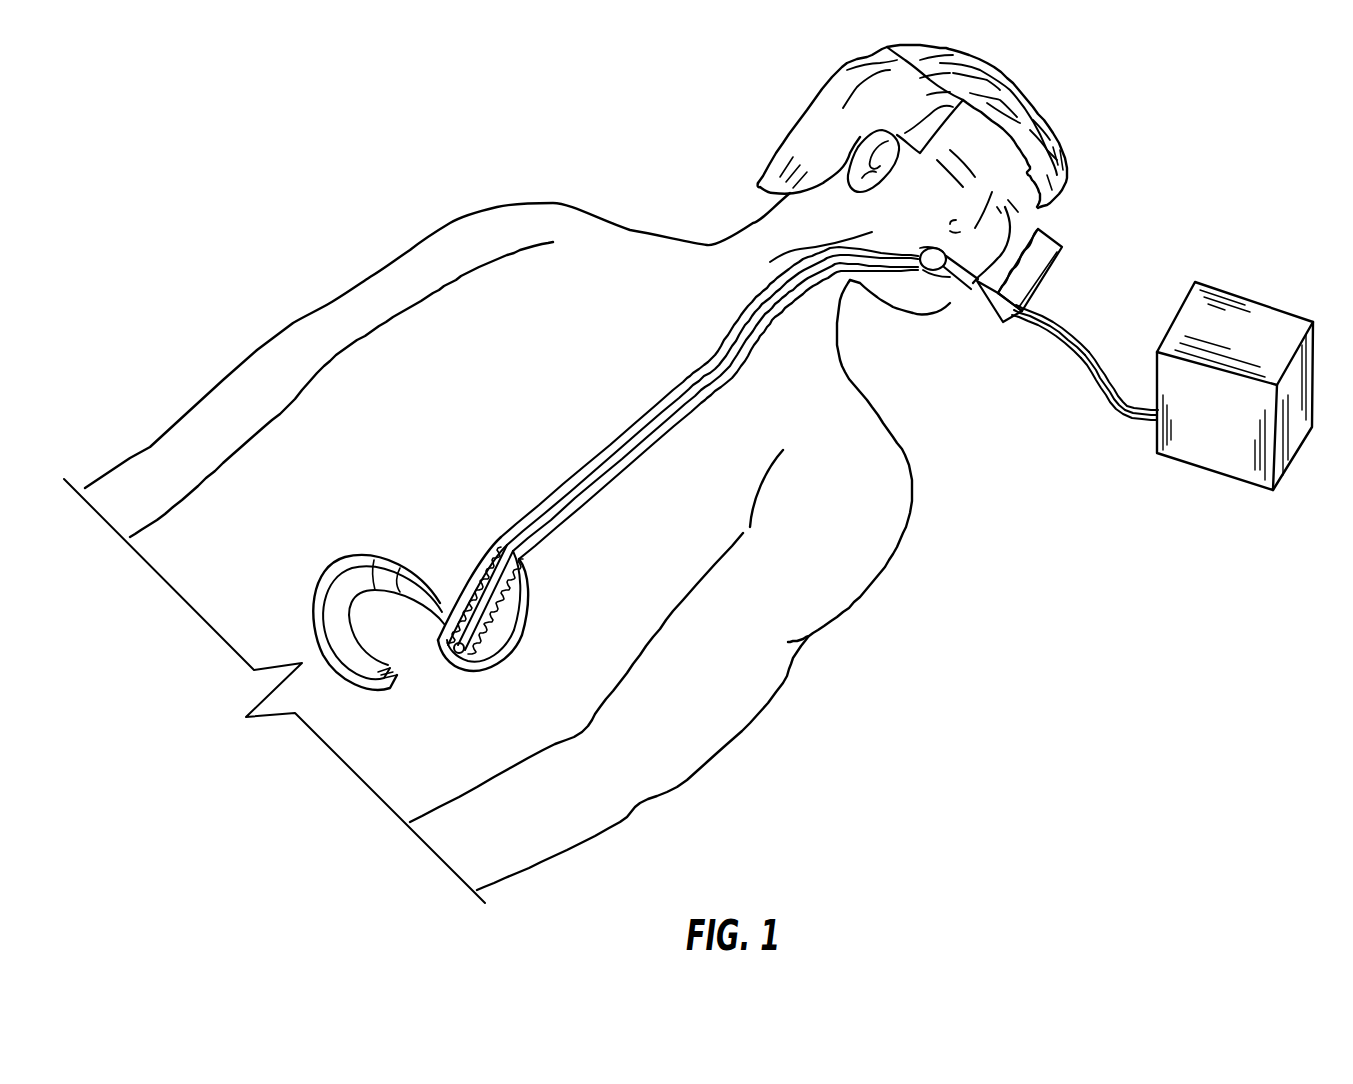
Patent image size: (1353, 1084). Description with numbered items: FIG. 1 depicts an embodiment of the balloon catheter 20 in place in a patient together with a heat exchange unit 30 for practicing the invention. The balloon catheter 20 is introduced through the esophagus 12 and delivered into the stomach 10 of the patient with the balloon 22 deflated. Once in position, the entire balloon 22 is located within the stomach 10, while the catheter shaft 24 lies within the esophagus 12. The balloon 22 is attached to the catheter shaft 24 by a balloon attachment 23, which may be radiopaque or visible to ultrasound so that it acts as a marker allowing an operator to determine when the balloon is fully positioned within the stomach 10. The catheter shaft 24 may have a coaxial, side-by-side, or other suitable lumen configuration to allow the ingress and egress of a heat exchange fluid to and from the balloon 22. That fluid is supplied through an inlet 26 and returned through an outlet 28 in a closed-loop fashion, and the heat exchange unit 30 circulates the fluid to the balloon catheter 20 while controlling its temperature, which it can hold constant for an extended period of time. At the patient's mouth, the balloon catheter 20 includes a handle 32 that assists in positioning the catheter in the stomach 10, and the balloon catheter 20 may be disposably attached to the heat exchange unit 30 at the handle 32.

The stomach 10 is at (500, 617).
The esophagus 12 is at (707, 395).
The balloon catheter 20 is at (973, 295).
The balloon 22 is at (440, 660).
The balloon attachment 23 is at (507, 552).
The catheter shaft 24 is at (713, 357).
The inlet 26 is at (1080, 367).
The outlet 28 is at (1057, 322).
The heat exchange unit 30 is at (1273, 315).
The handle 32 is at (1046, 240).